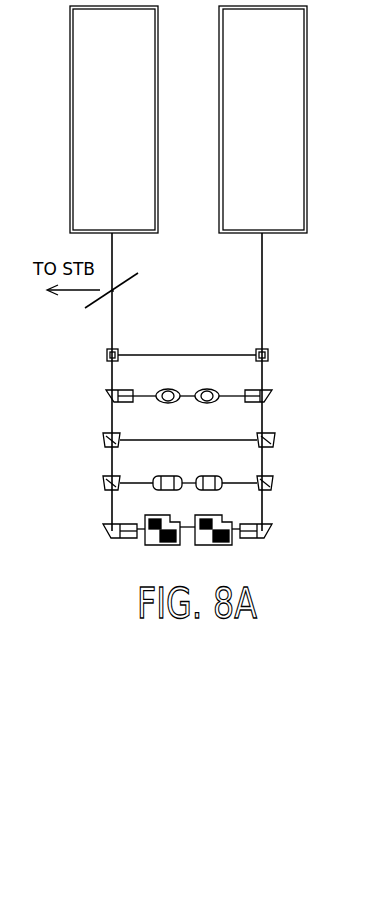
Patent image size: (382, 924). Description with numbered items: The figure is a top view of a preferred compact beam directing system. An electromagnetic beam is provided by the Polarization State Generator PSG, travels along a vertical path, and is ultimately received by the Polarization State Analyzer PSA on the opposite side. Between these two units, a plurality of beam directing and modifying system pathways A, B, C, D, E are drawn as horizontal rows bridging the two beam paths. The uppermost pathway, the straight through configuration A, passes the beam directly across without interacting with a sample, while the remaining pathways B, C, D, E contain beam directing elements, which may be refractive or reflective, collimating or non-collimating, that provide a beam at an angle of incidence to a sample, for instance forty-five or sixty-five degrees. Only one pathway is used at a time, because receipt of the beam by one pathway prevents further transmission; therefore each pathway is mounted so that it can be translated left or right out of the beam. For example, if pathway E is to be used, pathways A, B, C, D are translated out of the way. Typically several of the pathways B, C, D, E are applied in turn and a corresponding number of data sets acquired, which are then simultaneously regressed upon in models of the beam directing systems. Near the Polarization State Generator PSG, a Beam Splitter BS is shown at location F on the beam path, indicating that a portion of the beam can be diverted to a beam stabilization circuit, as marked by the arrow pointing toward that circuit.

The Polarization State Generator PSG is at (97, 127).
The Polarization State Analyzer PSA is at (283, 126).
The location of the Beam Splitter F is at (128, 290).
The Beam Splitter BS is at (130, 303).
The straight through configuration A is at (213, 360).
The beam directing and modifying system pathway B is at (213, 400).
The beam directing and modifying system pathway C is at (211, 444).
The beam directing and modifying system pathway D is at (212, 487).
The beam directing and modifying system pathway E is at (211, 530).